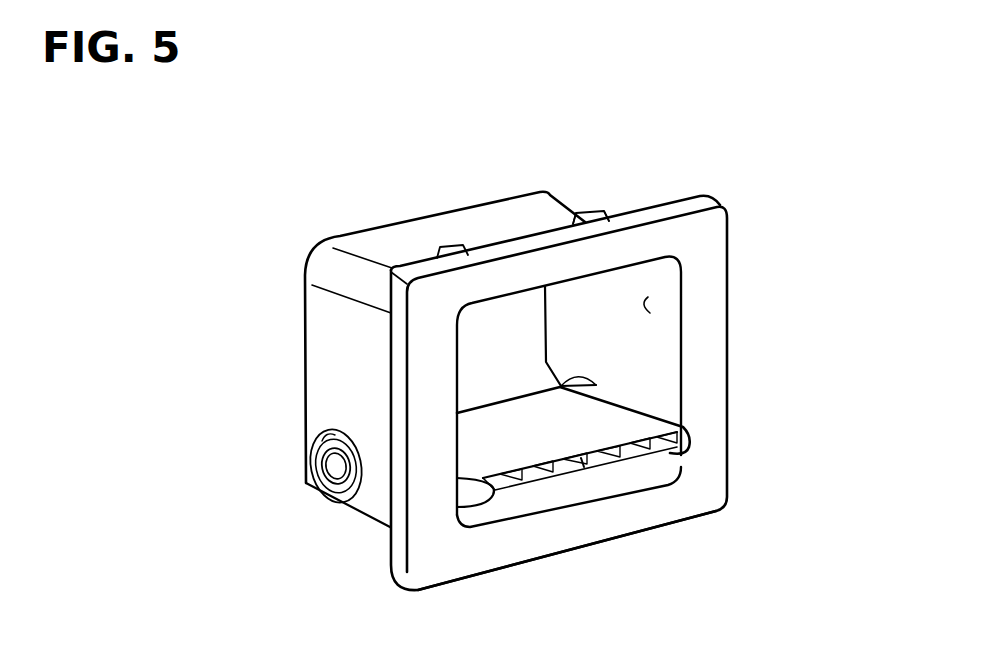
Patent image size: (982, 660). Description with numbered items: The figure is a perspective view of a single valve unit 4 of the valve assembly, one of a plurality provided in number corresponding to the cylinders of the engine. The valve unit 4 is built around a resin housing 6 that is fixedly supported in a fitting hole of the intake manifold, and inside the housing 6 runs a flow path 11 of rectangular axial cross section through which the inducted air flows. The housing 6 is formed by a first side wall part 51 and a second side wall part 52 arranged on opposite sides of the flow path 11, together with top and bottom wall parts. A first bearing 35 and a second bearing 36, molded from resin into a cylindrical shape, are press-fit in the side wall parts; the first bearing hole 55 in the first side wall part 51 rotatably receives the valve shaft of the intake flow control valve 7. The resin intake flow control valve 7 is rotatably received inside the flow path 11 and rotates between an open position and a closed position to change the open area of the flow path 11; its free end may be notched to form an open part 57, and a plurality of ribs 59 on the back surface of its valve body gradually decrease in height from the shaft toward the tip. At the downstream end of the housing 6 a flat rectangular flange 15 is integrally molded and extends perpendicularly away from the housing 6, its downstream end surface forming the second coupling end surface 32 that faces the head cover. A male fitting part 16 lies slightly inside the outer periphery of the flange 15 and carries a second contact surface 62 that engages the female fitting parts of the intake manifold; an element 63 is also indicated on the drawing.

The valve unit 4 is at (283, 200).
The resin housing 6 is at (435, 247).
The intake flow control valve 7 is at (617, 415).
The flow path 11 is at (650, 313).
The flange 15 is at (681, 197).
The male fitting part 16 is at (440, 250).
The second coupling end surface 32 is at (477, 548).
The first bearing 35 is at (320, 473).
The second bearing 36 is at (583, 372).
The first side wall part 51 is at (337, 362).
The second side wall part 52 is at (490, 228).
The first bearing hole 55 is at (327, 445).
The open part 57 is at (583, 462).
The ribs 59 is at (550, 480).
The second contact surface 62 is at (601, 212).
The guide rib 63 is at (573, 216).